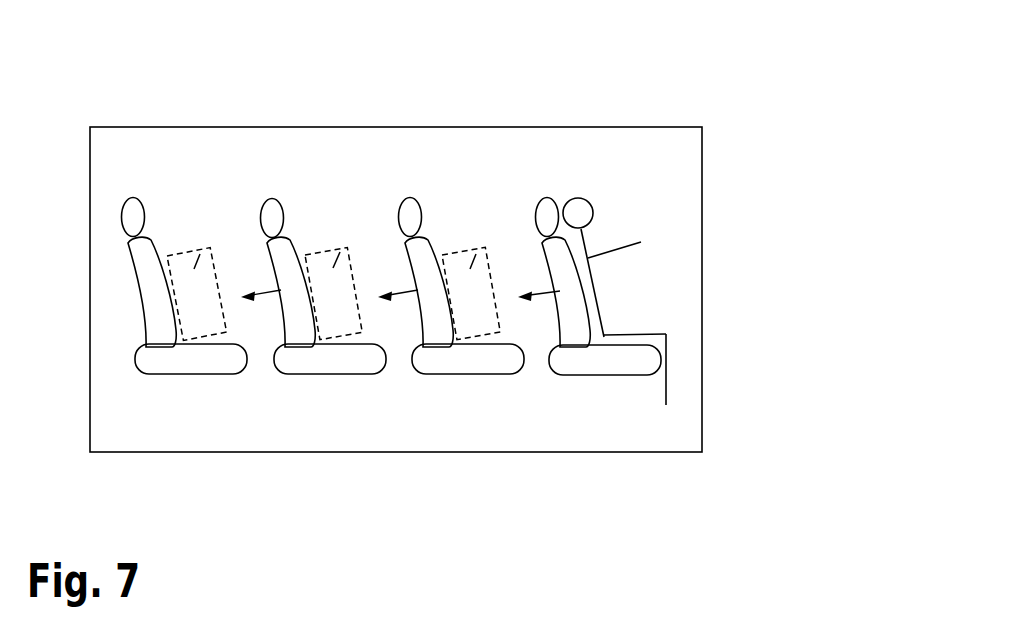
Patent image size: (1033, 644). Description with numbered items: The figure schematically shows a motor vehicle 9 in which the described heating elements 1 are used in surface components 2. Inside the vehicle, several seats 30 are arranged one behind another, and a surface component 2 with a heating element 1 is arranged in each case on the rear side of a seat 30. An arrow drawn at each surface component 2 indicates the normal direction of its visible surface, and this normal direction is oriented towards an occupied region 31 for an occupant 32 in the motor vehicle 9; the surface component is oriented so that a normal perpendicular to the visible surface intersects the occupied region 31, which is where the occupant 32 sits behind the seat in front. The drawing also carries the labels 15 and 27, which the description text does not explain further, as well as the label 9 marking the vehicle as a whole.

The heating element 1 is at (394, 390).
The surface component 2 is at (280, 320).
The motor vehicle 9 is at (714, 64).
The display device 15 is at (262, 290).
The cabin compartment 27 is at (673, 295).
The seat 30 is at (156, 241).
The occupied region 31 is at (193, 87).
The occupant 32 is at (578, 198).